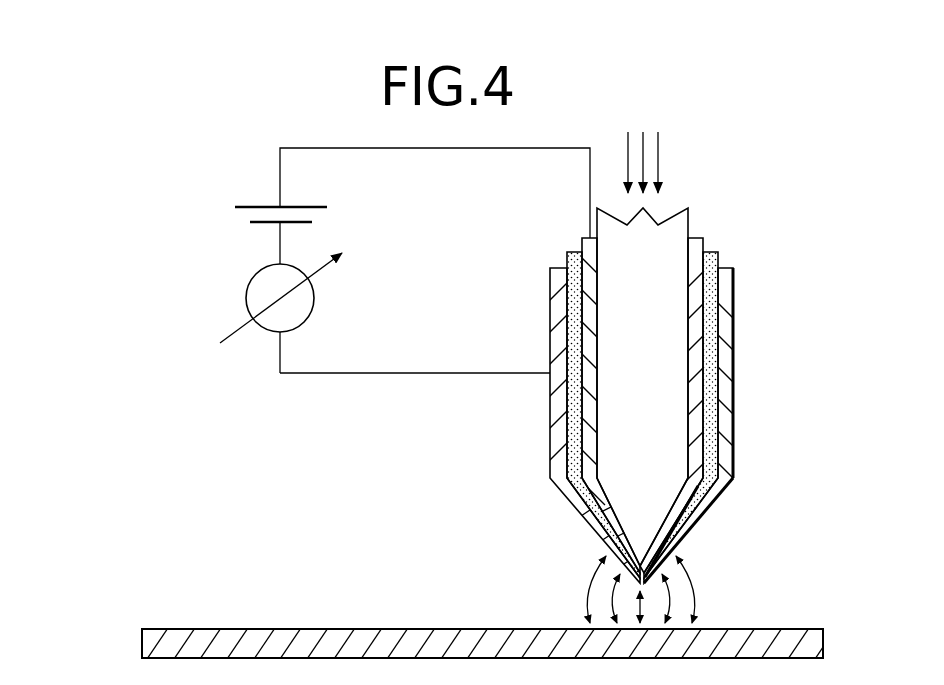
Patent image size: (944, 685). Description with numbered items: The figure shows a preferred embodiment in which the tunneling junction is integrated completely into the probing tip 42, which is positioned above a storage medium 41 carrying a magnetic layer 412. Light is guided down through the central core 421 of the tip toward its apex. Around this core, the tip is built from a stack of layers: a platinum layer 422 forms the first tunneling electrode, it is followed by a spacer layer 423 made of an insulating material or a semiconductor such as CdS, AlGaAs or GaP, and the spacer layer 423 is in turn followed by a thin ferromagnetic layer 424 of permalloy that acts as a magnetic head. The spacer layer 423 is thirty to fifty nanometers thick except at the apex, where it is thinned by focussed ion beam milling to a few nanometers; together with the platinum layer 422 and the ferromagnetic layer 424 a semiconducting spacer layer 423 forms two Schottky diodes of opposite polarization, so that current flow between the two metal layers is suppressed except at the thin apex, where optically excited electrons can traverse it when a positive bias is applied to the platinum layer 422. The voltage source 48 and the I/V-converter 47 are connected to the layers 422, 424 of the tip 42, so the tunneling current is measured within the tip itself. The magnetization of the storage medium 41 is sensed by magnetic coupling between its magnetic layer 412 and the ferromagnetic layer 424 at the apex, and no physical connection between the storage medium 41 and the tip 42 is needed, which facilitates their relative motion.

The storage medium 41 is at (126, 628).
The magnetic layer 412 is at (747, 630).
The tip 42 is at (647, 357).
The light receiving crystal core 421 is at (667, 220).
The platinum layer 422 is at (588, 244).
The spacer layer 423 is at (718, 257).
The ferromagnetic layer 424 is at (734, 450).
The I/V-converter 47 is at (246, 298).
The voltage source 48 is at (255, 206).